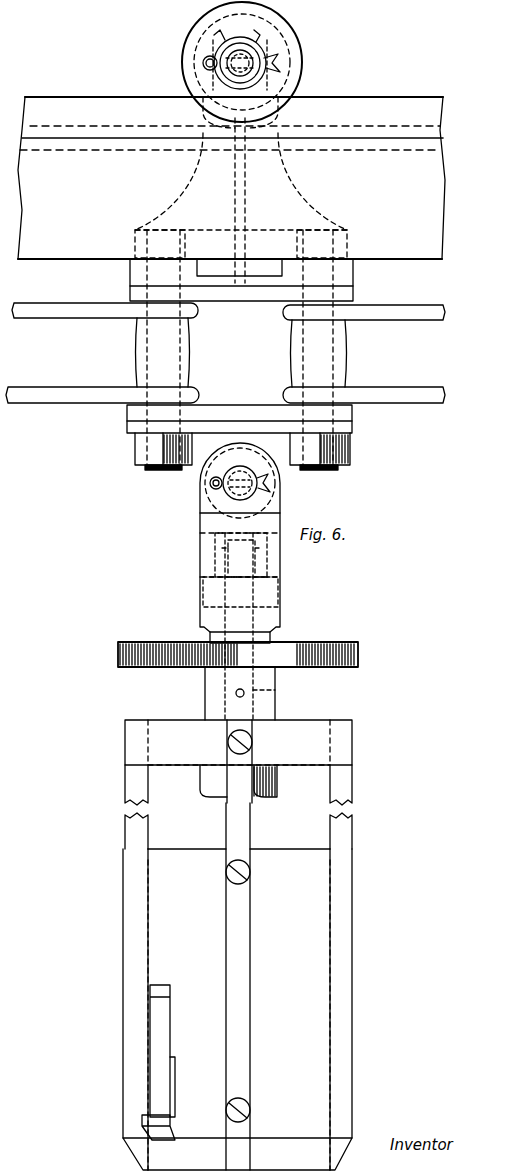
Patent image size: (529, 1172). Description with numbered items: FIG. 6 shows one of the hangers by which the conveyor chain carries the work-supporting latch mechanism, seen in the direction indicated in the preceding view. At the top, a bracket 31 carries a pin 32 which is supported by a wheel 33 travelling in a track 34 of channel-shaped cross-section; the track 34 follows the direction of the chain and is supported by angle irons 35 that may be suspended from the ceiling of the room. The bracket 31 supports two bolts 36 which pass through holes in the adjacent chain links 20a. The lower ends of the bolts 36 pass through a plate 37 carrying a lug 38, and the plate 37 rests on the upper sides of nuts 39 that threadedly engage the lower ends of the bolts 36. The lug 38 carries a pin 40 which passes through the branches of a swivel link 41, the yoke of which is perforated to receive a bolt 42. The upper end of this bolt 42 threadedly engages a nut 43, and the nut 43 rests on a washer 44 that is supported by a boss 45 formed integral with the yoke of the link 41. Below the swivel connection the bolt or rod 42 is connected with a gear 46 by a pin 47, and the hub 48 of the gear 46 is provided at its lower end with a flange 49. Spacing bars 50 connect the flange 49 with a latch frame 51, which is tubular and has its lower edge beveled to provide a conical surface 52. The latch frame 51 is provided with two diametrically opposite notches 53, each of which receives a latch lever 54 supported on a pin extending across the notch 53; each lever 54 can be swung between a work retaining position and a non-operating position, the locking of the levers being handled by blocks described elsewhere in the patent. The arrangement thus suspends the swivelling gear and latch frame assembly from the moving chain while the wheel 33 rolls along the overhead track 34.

The chain links 20a is at (68, 308).
The bracket 31 is at (302, 197).
The pin 32 is at (258, 54).
The wheel 33 is at (283, 40).
The track 34 is at (360, 103).
The angle irons 35 is at (425, 185).
The bolts 36 is at (148, 346).
The plate 37 is at (133, 423).
The lug 38 is at (212, 452).
The nuts 39 is at (135, 454).
The pin 40 is at (272, 491).
The swivel link 41 is at (203, 548).
The bolt 42 is at (276, 690).
The nut 43 is at (264, 556).
The washer 44 is at (203, 578).
The boss 45 is at (210, 598).
The gear 46 is at (358, 655).
The pin 47 is at (243, 697).
The hub 48 is at (210, 690).
The flange 49 is at (315, 742).
The spacing bars 50 is at (130, 830).
The latch frame 51 is at (137, 881).
The conical surface 52 is at (137, 1150).
The notches 53 is at (162, 990).
The latch lever 54 is at (160, 1038).